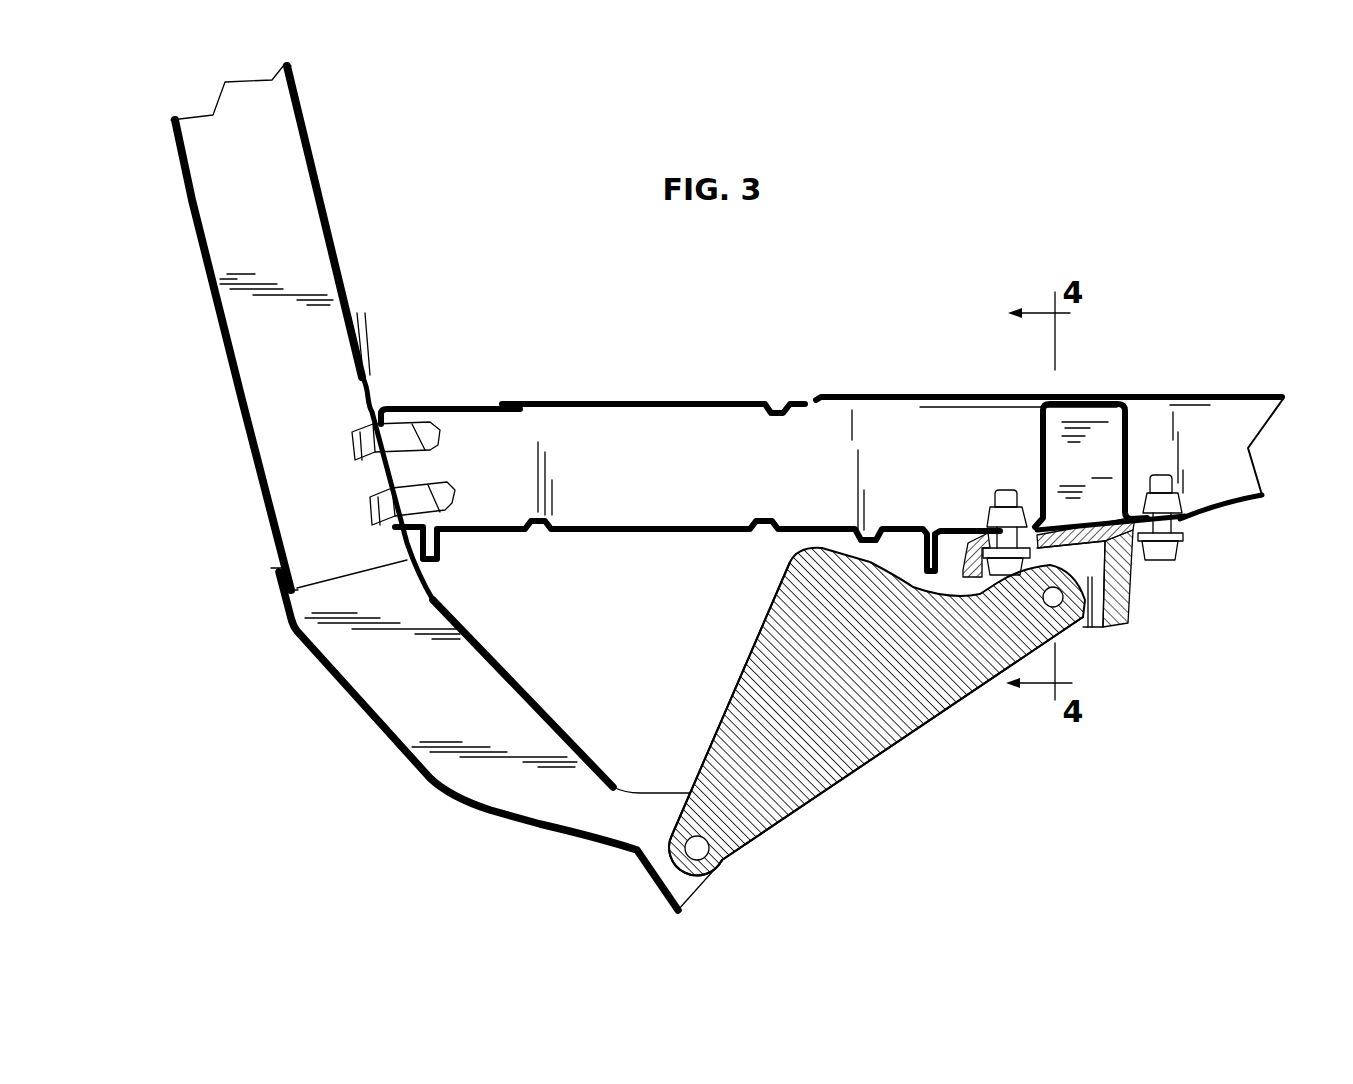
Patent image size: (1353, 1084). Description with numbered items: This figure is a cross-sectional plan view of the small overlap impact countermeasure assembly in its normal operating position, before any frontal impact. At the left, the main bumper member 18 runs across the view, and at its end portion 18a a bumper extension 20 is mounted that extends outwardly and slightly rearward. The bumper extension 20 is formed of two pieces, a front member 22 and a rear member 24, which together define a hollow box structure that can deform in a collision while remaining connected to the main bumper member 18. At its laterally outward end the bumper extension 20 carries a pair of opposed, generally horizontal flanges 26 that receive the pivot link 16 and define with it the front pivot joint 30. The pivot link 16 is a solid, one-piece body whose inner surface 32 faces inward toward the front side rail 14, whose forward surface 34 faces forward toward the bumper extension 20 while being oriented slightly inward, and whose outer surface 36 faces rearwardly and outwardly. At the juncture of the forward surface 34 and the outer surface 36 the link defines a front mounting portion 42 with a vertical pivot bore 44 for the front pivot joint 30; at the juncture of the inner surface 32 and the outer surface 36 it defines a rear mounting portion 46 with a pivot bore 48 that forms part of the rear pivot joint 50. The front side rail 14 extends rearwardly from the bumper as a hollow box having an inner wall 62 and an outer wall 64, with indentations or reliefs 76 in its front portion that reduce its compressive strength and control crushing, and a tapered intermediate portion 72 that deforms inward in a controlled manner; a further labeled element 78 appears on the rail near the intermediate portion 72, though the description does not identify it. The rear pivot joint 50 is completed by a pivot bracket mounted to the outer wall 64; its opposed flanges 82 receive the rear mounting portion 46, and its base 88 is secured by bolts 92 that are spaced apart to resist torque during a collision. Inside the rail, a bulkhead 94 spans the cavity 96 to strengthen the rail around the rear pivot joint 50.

The front side rail 14 is at (679, 376).
The pivot link 16 is at (700, 668).
The main bumper member 18 is at (303, 113).
The end portion of the main bumper 18a is at (263, 517).
The bumper extension 20 is at (338, 760).
The front member 22 is at (335, 683).
The rear member 24 is at (467, 618).
The flanges 26 is at (660, 840).
The front pivot joint 30 is at (740, 889).
The inner surface 32 is at (888, 580).
The forward surface 34 is at (712, 748).
The outer surface 36 is at (755, 842).
The front mounting portion 42 is at (683, 823).
The vertical pivot bore 44 is at (697, 857).
The rear mounting portion 46 is at (1066, 596).
The pivot bore 48 is at (1095, 627).
The rear pivot joint 50 is at (1083, 654).
The inner wall 62 is at (590, 402).
The outer wall 64 is at (667, 535).
The intermediate portion 72 is at (1228, 393).
The indentations or reliefs 76 is at (773, 400).
The wall of beam member 78 is at (1163, 393).
The flanges 82 is at (1080, 556).
The base 88 is at (1040, 583).
The bolts 92 is at (1165, 548).
The bulkhead 94 is at (1043, 458).
The cavity 96 is at (980, 520).